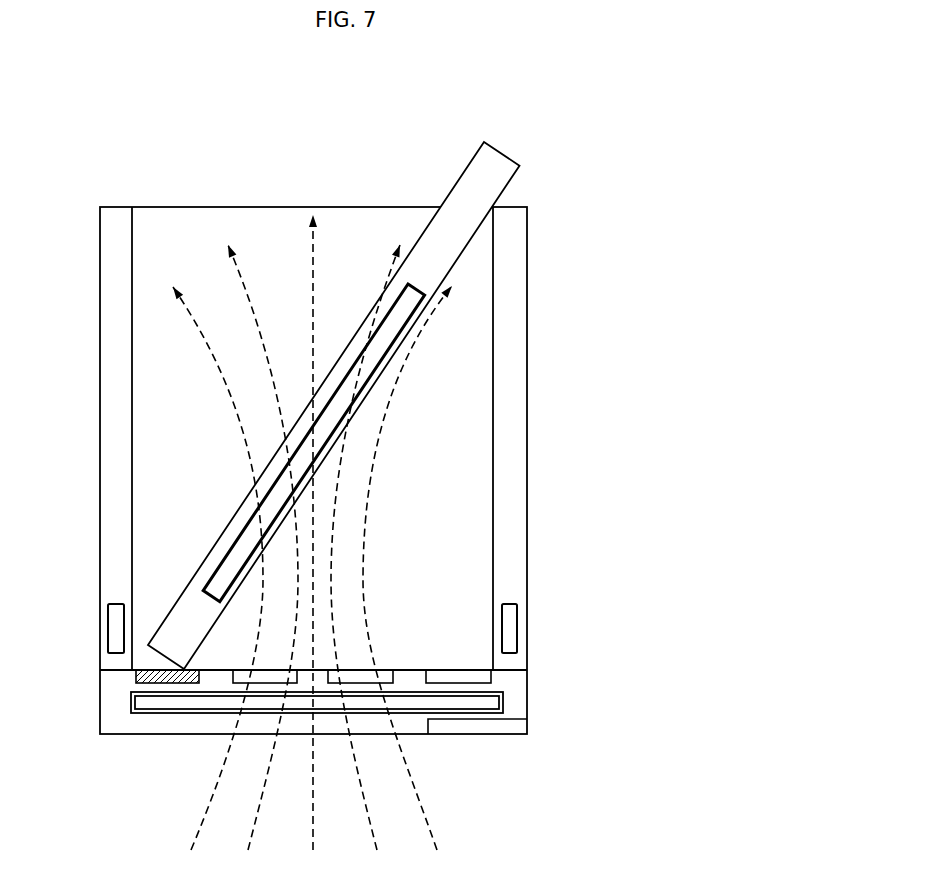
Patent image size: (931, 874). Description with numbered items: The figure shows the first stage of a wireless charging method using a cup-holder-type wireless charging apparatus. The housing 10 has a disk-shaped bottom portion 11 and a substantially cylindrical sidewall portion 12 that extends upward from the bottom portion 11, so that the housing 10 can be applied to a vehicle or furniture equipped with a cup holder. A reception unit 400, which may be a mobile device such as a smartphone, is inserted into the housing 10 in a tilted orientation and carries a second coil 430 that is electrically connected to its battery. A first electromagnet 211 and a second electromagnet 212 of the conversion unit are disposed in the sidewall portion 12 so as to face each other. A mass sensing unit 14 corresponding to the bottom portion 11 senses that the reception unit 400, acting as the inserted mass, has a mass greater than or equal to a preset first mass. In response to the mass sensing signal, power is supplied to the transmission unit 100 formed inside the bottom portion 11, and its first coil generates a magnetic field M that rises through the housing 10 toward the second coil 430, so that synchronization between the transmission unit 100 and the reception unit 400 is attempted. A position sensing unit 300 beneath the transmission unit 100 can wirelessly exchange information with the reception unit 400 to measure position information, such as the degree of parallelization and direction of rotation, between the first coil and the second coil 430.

The housing 10 is at (622, 558).
The bottom portion 11 is at (513, 682).
The sidewall portion 12 is at (513, 566).
The mass sensing unit 14 is at (137, 677).
The transmission unit 100 is at (507, 700).
The first electromagnet 211 is at (502, 628).
The second electromagnet 212 is at (117, 632).
The position sensing unit 300 is at (515, 730).
The reception unit 400 is at (497, 163).
The second coil 430 is at (405, 332).
The magnetic field M is at (395, 430).